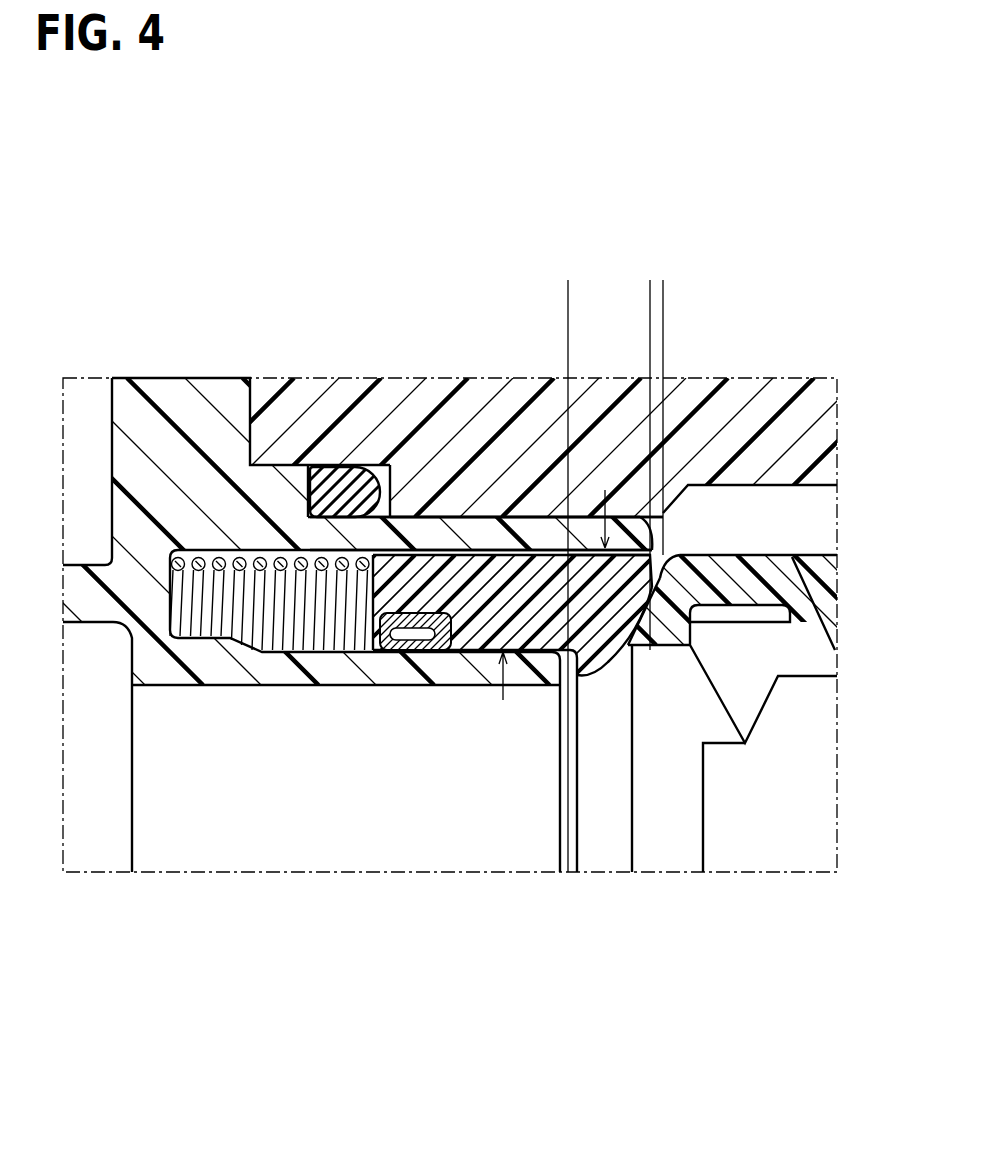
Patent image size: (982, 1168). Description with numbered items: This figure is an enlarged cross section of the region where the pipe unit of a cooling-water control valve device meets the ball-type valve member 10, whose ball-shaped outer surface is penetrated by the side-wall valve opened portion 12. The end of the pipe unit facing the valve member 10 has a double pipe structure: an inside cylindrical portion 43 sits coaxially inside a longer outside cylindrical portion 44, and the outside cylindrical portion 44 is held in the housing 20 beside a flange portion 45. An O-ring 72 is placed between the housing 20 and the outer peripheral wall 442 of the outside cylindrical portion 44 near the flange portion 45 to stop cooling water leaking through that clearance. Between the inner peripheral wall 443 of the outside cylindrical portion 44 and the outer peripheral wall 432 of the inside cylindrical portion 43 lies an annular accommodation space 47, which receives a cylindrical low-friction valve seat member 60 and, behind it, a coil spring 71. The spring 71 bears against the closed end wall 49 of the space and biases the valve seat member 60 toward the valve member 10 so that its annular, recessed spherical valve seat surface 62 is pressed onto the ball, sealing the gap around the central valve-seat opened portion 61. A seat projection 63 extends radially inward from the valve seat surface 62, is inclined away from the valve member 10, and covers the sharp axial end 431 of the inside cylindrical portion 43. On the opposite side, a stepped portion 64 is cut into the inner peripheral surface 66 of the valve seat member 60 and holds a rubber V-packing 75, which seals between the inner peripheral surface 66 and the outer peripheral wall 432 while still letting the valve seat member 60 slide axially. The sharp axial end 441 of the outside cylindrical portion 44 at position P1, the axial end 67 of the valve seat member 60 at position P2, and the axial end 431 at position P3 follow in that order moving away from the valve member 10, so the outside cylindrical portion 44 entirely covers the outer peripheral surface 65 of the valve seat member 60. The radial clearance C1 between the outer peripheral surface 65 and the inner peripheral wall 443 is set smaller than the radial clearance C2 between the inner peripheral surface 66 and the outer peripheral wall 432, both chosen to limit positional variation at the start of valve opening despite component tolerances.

The valve member 10 is at (806, 605).
The side-wall valve opened portion 12 is at (634, 838).
The housing 20 is at (348, 397).
The inside cylindrical portion 43 is at (352, 660).
The axial end of the inside cylindrical portion 431 is at (578, 667).
The outer peripheral wall of the inside cylindrical portion 432 is at (562, 654).
The outside cylindrical portion 44 is at (477, 528).
The axial end of the outside cylindrical portion 441 is at (665, 532).
The outer peripheral wall of the outside cylindrical portion 442 is at (409, 505).
The inner peripheral wall of the outside cylindrical portion 443 is at (415, 550).
The flange portion 45 is at (135, 467).
The annular accommodation space 47 is at (247, 548).
The closed end wall 49 is at (172, 615).
The valve seat member 60 is at (495, 650).
The valve-seat opened portion 61 is at (578, 841).
The valve seat surface 62 is at (630, 613).
The seat projection 63 is at (578, 651).
The stepped portion 64 is at (383, 655).
The outer peripheral surface of the valve seat member 65 is at (515, 553).
The inner peripheral surface of the valve seat member 66 is at (470, 653).
The axial end of the valve seat member 67 is at (662, 570).
The spring 71 is at (245, 640).
The O-ring 72 is at (332, 493).
The V-packing 75 is at (418, 655).
The radial clearance C1 is at (622, 540).
The radial clearance C2 is at (503, 700).
The position P1 is at (663, 290).
The position P2 is at (650, 290).
The position P3 is at (568, 290).